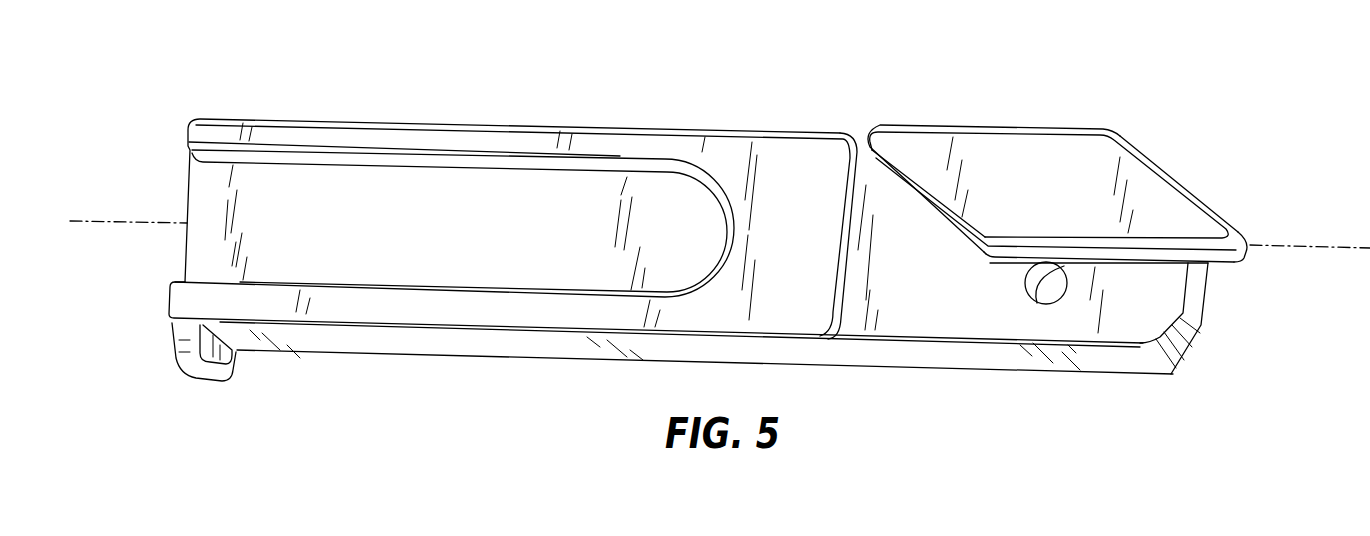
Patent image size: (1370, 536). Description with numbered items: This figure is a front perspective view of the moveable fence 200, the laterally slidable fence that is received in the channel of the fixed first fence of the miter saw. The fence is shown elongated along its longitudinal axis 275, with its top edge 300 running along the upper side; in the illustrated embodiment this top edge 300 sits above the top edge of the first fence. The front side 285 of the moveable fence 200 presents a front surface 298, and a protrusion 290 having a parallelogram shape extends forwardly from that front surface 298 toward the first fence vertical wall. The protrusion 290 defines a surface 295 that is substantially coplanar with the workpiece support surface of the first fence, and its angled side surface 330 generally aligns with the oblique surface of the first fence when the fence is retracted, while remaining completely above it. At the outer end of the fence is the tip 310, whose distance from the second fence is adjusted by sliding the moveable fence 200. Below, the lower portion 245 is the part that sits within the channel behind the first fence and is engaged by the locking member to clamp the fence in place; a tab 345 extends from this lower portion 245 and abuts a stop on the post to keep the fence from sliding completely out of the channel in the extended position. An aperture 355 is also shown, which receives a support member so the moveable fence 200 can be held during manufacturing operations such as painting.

The moveable fence 200 is at (1003, 73).
The front side 285 is at (143, 327).
The lower portion 245 is at (1237, 336).
The top edge 300 is at (425, 119).
The front surface 298 is at (787, 180).
The protrusion 290 is at (917, 127).
The surface 295 is at (1069, 167).
The side surface 330 is at (1192, 192).
The tip 310 is at (1248, 248).
The longitudinal axis 275 is at (1304, 246).
The aperture 355 is at (1060, 305).
The tab 345 is at (207, 373).